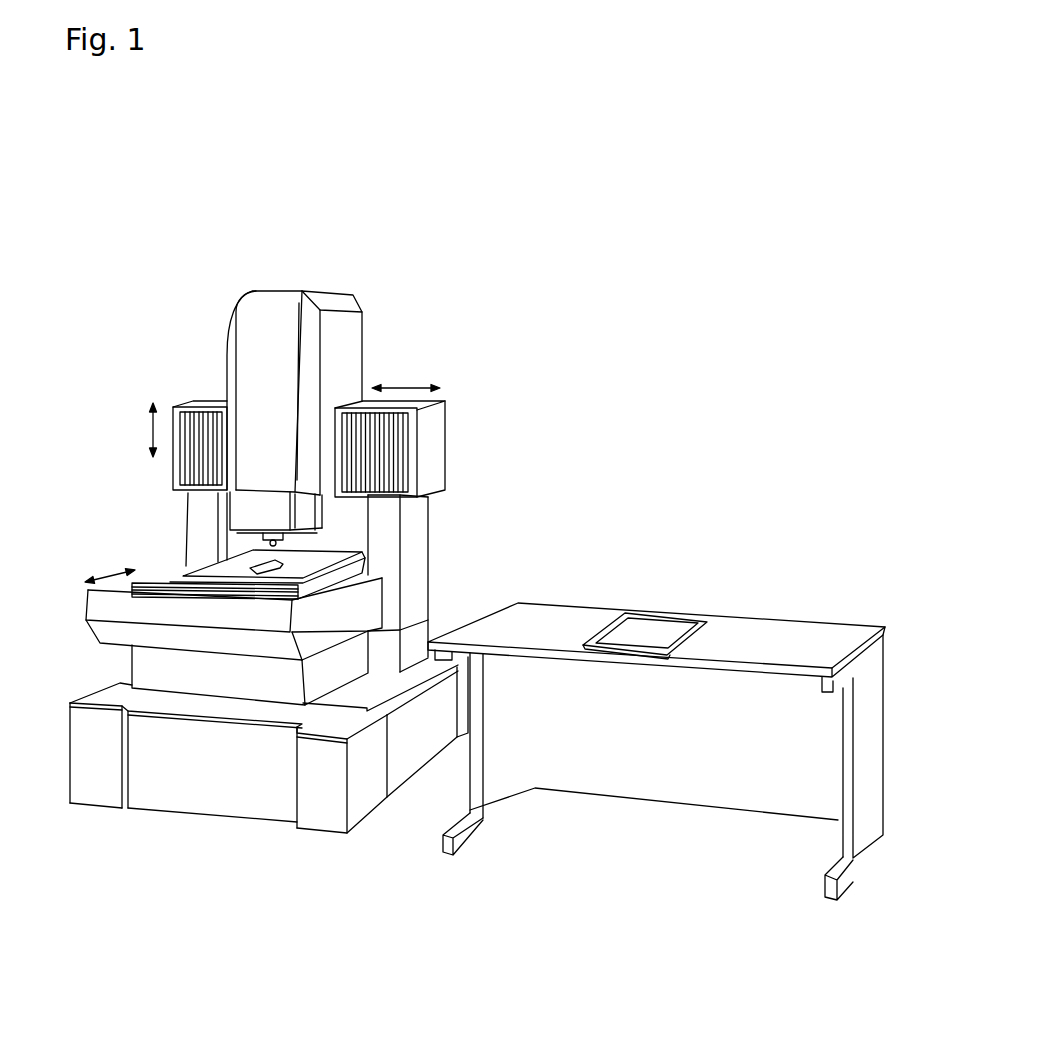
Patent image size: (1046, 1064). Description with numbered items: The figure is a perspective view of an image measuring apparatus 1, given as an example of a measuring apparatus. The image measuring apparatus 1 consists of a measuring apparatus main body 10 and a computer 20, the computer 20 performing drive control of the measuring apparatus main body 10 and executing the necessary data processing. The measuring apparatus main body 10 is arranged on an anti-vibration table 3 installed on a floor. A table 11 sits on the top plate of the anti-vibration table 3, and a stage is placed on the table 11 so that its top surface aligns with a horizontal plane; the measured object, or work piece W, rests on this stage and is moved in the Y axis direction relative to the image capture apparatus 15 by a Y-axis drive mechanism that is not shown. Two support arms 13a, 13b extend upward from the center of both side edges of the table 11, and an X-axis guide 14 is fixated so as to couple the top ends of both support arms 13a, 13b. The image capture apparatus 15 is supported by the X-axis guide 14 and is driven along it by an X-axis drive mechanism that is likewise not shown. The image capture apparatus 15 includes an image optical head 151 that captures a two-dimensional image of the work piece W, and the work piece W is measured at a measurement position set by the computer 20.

The image measuring apparatus 1 is at (512, 127).
The measuring apparatus main body 10 is at (370, 258).
The table 11 is at (142, 590).
The support arm 13a is at (422, 528).
The support arm 13b is at (192, 547).
The X-axis guide 14 is at (198, 402).
The image capture apparatus 15 is at (229, 333).
The image optical head 151 is at (273, 540).
The work piece W is at (258, 566).
The computer 20 is at (662, 625).
The anti-vibration table 3 is at (251, 787).